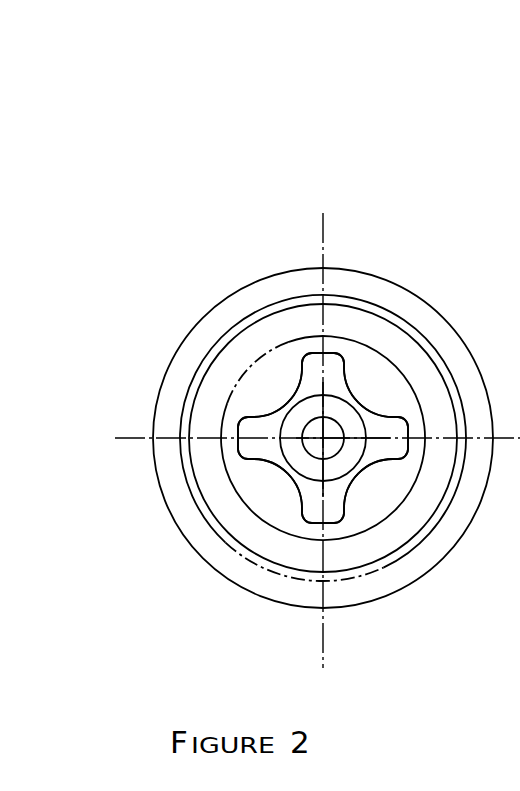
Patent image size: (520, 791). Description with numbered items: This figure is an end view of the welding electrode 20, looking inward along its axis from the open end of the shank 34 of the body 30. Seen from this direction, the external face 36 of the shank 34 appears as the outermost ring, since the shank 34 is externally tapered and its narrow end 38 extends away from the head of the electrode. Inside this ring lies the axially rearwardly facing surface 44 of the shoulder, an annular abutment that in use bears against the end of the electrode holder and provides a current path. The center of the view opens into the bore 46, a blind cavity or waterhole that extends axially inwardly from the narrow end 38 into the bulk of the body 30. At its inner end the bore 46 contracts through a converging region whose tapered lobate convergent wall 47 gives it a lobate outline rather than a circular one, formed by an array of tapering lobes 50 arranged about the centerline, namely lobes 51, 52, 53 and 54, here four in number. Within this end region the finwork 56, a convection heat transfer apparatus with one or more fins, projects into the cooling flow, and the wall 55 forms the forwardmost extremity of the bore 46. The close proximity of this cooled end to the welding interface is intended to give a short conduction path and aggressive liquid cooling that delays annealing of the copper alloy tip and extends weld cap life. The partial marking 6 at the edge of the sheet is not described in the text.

The welding electrode 20 is at (245, 66).
The body 30 is at (230, 306).
The shank 34 is at (391, 341).
The external face 36 is at (414, 340).
The narrow end 38 is at (238, 350).
The axially rearwardly facing surface 44 is at (369, 290).
The bore 46 is at (367, 501).
The tapered lobate convergent wall 47 is at (282, 484).
The tapering lobes 50 is at (294, 363).
The lobe 51 is at (312, 348).
The lobe 52 is at (403, 412).
The lobe 53 is at (303, 500).
The lobe 54 is at (247, 415).
The wall 55 is at (266, 438).
The finwork 56 is at (307, 450).
The partial numeral 6 is at (511, 552).